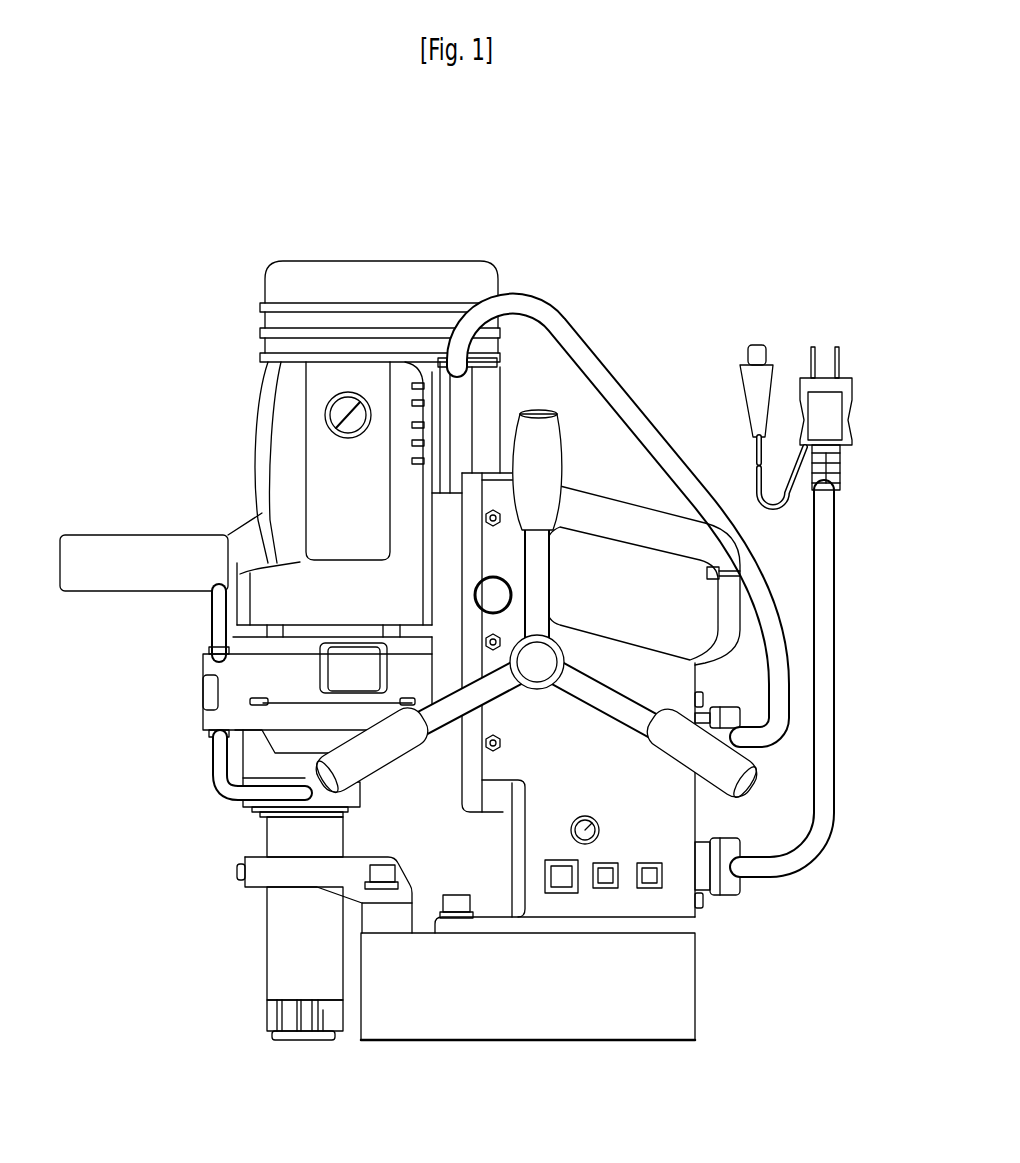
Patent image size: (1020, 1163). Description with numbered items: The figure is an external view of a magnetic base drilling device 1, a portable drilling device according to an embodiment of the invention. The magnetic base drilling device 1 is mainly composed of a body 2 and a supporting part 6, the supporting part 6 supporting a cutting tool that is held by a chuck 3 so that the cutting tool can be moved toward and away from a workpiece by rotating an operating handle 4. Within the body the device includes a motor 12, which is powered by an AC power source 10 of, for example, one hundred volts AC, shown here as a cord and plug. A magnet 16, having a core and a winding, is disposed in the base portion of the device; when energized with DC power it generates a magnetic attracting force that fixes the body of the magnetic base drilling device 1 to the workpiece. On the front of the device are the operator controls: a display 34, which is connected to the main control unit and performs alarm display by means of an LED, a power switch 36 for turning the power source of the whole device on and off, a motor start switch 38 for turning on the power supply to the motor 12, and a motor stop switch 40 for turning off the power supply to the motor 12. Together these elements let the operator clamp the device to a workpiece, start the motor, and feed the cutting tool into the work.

The magnetic base drilling device 1 is at (524, 227).
The body 2 is at (380, 256).
The chuck 3 is at (284, 1049).
The operating handle 4 is at (760, 770).
The supporting part 6 is at (590, 482).
The AC power source 10 is at (826, 332).
The motor 12 is at (325, 481).
The magnet 16 is at (697, 963).
The display 34 is at (600, 823).
The power switch 36 is at (560, 878).
The motor start switch 38 is at (605, 878).
The motor stop switch 40 is at (650, 878).